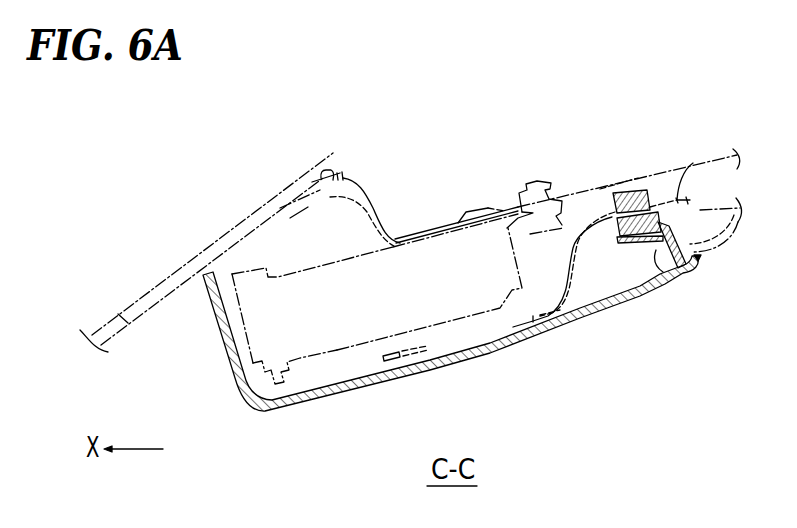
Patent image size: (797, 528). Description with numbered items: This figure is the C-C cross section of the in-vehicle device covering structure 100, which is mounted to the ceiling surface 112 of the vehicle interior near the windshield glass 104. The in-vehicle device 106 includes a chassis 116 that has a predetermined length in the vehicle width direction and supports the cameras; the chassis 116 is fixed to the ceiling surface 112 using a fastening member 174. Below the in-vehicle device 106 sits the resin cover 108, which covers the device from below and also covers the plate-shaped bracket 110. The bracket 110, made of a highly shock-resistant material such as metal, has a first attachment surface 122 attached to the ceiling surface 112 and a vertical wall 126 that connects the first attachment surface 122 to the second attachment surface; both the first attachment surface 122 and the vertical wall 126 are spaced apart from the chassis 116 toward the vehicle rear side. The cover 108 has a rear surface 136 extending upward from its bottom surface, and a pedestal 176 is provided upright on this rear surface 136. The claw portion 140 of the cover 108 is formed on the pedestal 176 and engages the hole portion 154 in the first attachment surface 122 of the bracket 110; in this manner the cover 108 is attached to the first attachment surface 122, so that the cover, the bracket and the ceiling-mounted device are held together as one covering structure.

The in-vehicle device covering structure 100 is at (385, 147).
The windshield glass 104 is at (232, 229).
The in-vehicle device 106 is at (333, 360).
The cover 108 is at (218, 363).
The bracket 110 is at (575, 306).
The ceiling surface 112 is at (568, 193).
The chassis 116 is at (430, 255).
The first attachment surface 122 is at (685, 167).
The vertical wall 126 is at (573, 270).
The rear surface 136 is at (688, 284).
The claw portion 140 is at (645, 189).
The hole portion 154 is at (615, 194).
The fastening member 174 is at (536, 183).
The pedestal 176 is at (660, 255).